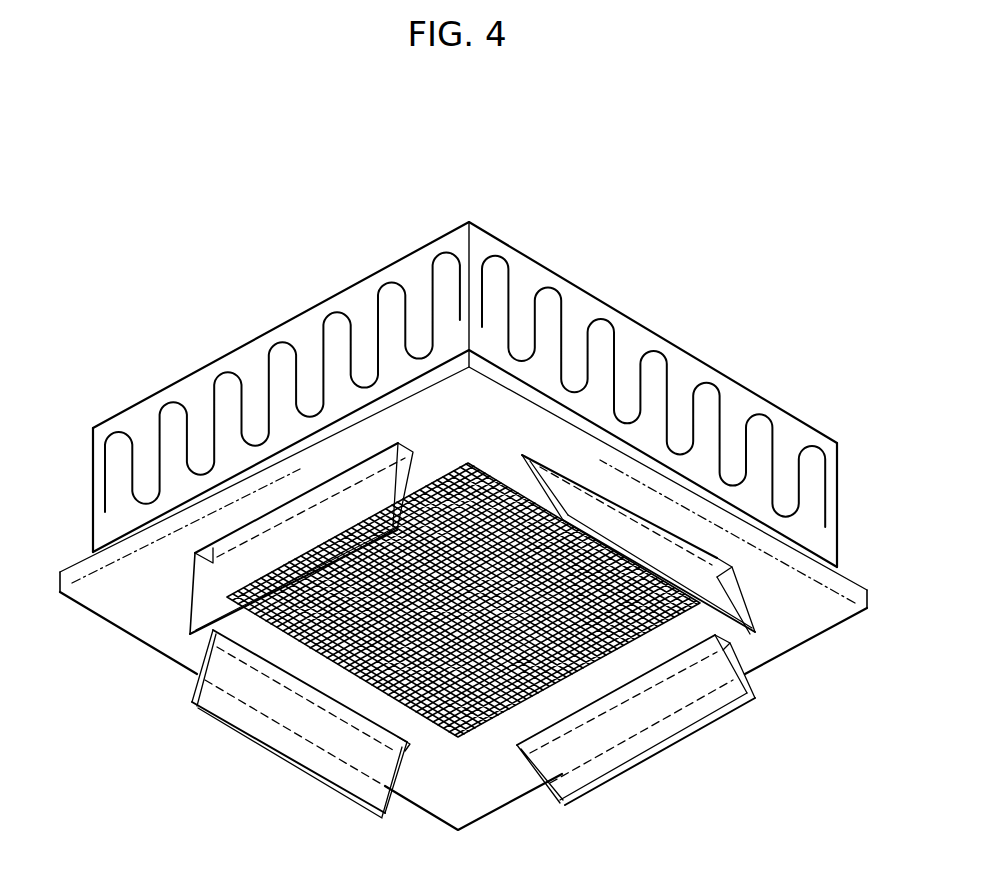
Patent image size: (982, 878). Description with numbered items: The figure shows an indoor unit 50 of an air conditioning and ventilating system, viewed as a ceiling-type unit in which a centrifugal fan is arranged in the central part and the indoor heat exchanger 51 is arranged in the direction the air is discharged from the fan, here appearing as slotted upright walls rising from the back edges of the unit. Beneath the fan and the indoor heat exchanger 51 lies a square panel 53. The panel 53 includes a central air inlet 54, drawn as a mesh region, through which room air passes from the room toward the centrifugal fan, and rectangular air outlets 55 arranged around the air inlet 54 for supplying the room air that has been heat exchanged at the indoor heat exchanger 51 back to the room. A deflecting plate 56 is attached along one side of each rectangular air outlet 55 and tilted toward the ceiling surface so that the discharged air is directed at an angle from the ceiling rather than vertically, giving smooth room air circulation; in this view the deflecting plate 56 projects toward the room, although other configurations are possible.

The indoor unit 50 is at (585, 283).
The indoor heat exchanger 51 is at (685, 363).
The square panel 53 is at (813, 612).
The air inlet 54 is at (491, 722).
The air outlet 55 is at (521, 466).
The deflecting plate 56 is at (662, 747).